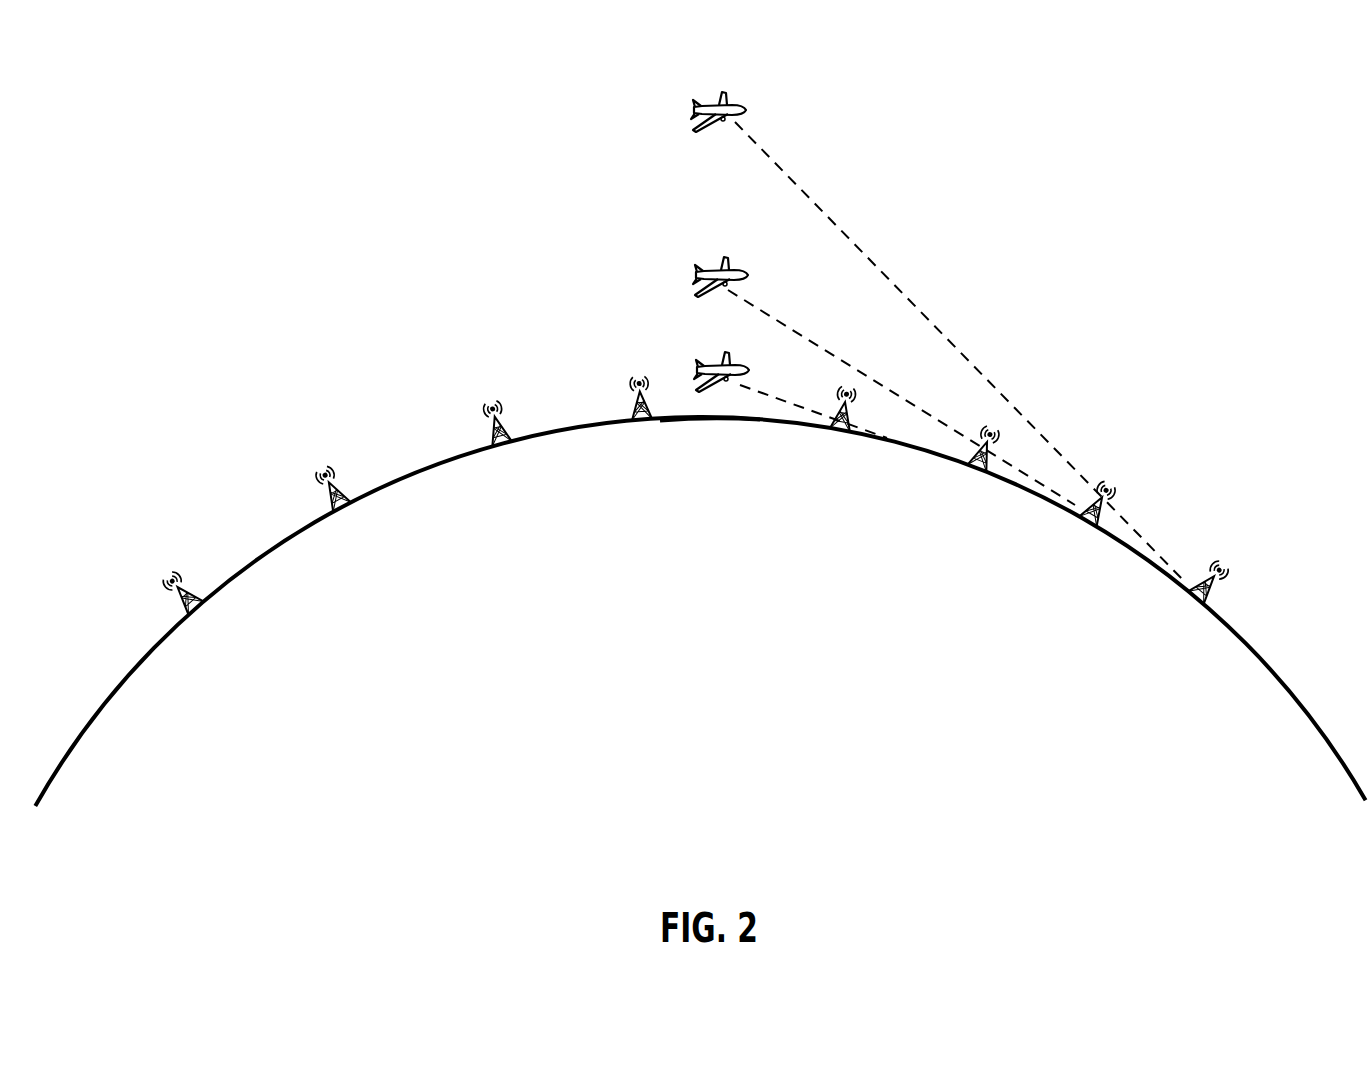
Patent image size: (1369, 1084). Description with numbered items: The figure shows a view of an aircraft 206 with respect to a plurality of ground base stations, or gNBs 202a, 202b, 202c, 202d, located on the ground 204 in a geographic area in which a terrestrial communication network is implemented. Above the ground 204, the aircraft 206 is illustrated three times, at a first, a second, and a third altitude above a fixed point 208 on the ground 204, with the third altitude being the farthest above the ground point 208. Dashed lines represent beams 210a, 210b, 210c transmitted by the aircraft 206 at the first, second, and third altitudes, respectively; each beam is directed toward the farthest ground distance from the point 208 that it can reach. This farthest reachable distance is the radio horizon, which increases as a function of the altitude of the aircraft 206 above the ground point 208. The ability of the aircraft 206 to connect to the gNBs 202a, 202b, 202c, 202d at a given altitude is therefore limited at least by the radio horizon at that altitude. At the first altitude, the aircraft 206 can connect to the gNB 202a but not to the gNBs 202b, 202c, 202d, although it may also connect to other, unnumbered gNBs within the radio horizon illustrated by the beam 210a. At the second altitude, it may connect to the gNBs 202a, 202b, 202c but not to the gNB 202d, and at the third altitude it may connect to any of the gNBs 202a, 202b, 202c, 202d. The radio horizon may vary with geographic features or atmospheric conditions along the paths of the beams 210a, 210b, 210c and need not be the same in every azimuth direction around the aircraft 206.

The gNB 202a is at (836, 432).
The gNB 202b is at (975, 470).
The gNB 202c is at (1087, 524).
The gNB 202d is at (1195, 600).
The ground 204 is at (460, 460).
The aircraft 206 is at (735, 101).
The fixed point on the ground 208 is at (737, 422).
The beam 210a is at (783, 395).
The beam 210b is at (788, 318).
The beam 210c is at (785, 171).